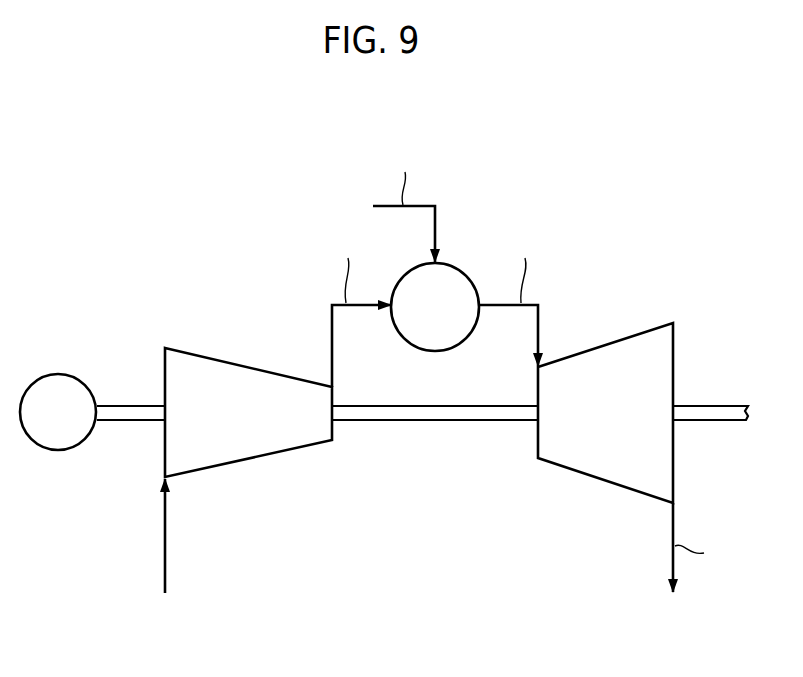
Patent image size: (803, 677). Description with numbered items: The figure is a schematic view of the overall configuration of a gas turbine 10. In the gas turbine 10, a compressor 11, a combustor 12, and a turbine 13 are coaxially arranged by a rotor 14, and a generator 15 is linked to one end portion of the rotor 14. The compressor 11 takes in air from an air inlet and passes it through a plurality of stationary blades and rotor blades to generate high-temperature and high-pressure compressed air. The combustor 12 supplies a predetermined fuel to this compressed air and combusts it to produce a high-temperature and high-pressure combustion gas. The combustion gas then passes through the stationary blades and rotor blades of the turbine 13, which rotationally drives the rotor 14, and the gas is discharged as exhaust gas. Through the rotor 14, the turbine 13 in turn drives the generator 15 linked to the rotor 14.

The gas turbine 10 is at (170, 150).
The compressor 11 is at (248, 383).
The combustor 12 is at (459, 268).
The turbine 13 is at (607, 357).
The rotor 14 is at (433, 424).
The generator 15 is at (60, 446).